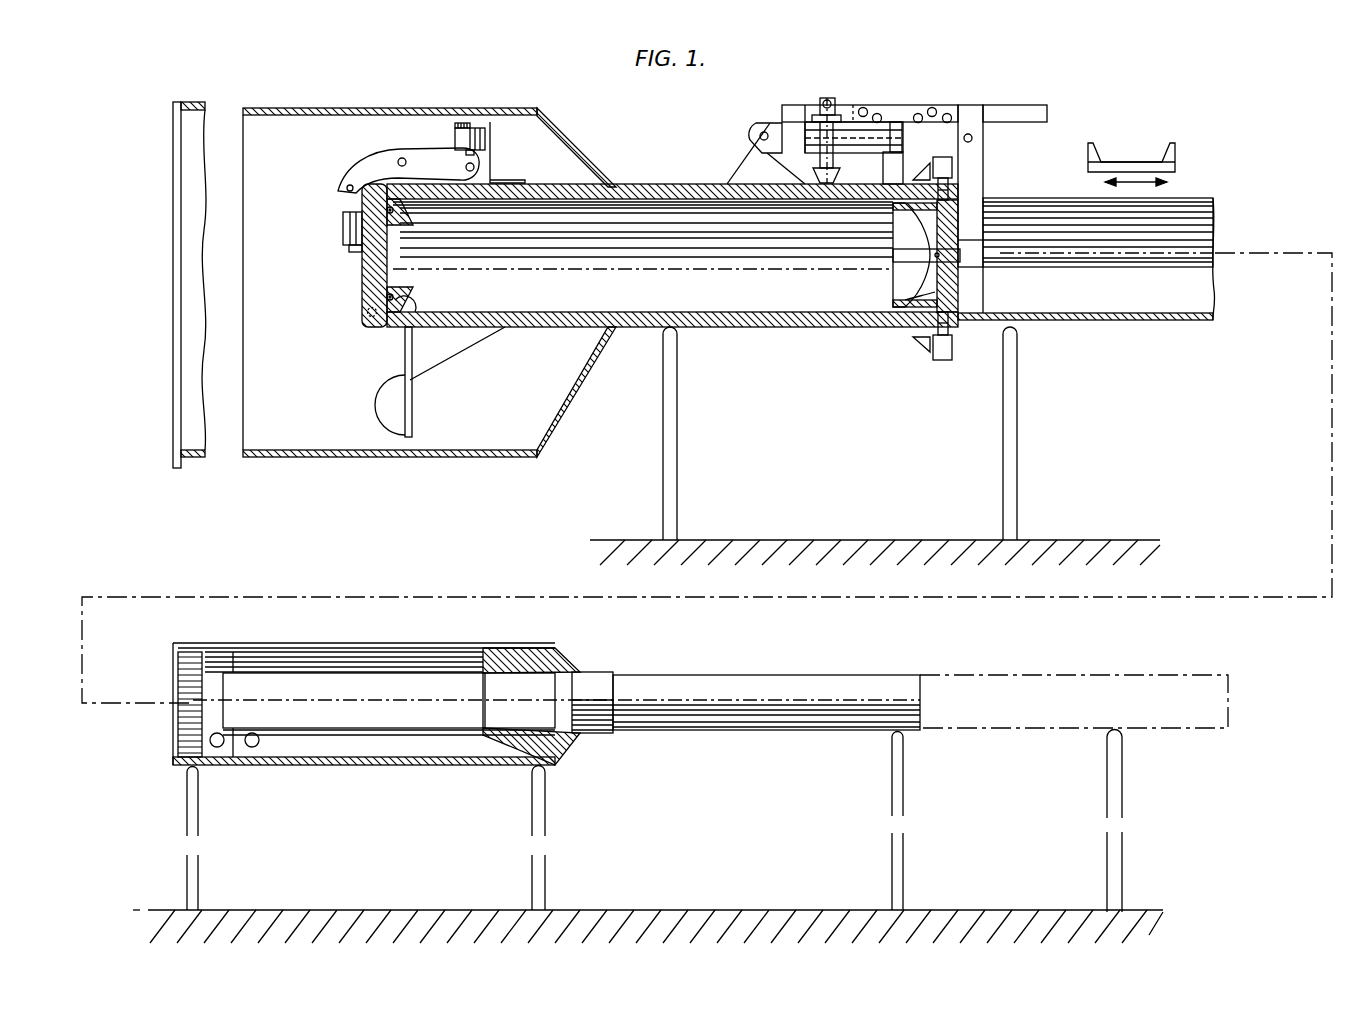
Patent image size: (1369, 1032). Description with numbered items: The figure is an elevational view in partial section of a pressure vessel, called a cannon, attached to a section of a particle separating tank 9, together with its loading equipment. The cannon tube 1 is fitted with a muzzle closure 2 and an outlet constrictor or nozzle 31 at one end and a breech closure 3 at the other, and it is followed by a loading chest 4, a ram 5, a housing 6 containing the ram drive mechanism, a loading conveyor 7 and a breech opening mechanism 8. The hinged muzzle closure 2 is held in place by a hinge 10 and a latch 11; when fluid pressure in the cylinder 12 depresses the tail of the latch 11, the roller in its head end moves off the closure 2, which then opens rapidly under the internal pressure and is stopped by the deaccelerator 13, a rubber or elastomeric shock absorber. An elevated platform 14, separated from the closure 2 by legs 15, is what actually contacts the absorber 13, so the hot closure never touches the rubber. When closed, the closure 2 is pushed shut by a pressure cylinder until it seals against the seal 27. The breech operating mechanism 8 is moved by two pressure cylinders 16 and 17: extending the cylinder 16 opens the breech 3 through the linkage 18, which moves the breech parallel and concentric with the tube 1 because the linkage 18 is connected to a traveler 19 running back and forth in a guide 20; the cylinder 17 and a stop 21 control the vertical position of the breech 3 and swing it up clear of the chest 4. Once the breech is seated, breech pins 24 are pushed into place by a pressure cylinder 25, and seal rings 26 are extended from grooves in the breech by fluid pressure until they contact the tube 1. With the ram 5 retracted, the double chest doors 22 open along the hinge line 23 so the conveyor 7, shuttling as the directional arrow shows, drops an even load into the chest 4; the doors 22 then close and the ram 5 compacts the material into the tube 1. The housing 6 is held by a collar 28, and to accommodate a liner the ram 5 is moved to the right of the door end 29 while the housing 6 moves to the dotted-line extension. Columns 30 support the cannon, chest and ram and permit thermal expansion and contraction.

The cannon tube 1 is at (847, 327).
The muzzle closure 2 is at (388, 244).
The breech closure 3 is at (893, 236).
The loading chest 4 is at (1102, 320).
The ram 5 is at (178, 735).
The housing 6 is at (788, 676).
The loading conveyor 7 is at (1175, 164).
The breech opening mechanism 8 is at (982, 96).
The separation tank section 9 is at (302, 108).
The hinge 10 is at (368, 316).
The latch 11 is at (360, 172).
The cylinder 12 is at (455, 140).
The deaccelerator 13 is at (380, 410).
The elevated platform 14 is at (343, 230).
The legs 15 is at (352, 252).
The pressure cylinder 16 is at (800, 132).
The pressure cylinder 17 is at (818, 157).
The linkage 18 is at (972, 138).
The traveler 19 is at (911, 90).
The guide 20 is at (1043, 106).
The stop 21 is at (883, 168).
The chest doors 22 is at (1208, 200).
The hinge line 23 is at (350, 703).
The breech pins 24 is at (946, 194).
The pressure cylinder 25 is at (952, 166).
The seal rings 26 is at (908, 305).
The seal 27 is at (394, 294).
The collar 28 is at (605, 672).
The door end 29 is at (485, 680).
The columns 30 is at (678, 455).
The outlet constrictor 31 is at (410, 305).